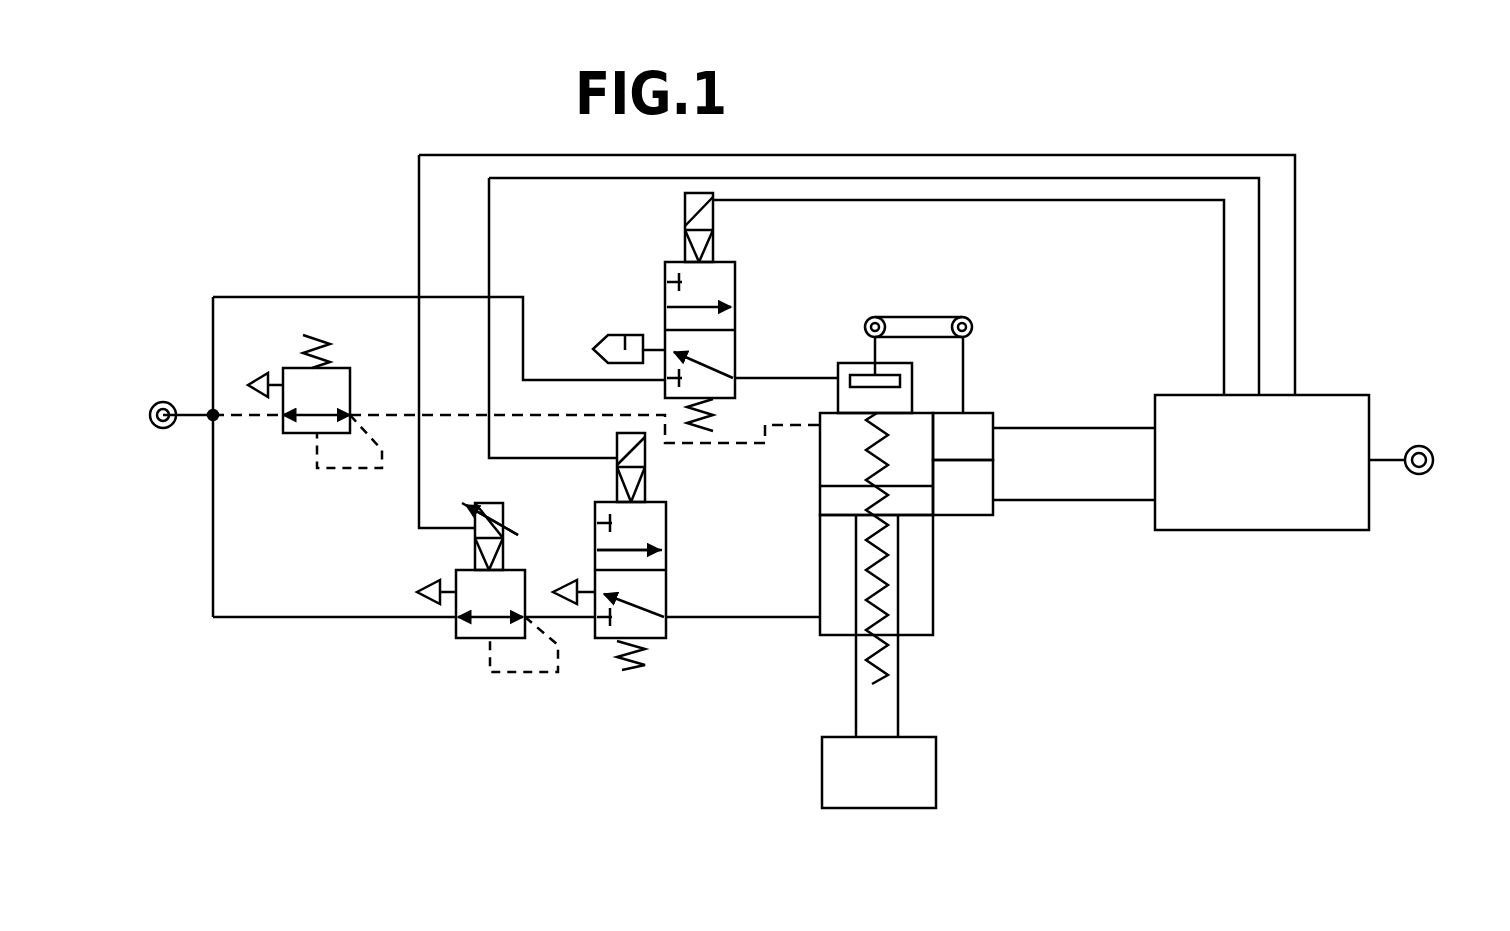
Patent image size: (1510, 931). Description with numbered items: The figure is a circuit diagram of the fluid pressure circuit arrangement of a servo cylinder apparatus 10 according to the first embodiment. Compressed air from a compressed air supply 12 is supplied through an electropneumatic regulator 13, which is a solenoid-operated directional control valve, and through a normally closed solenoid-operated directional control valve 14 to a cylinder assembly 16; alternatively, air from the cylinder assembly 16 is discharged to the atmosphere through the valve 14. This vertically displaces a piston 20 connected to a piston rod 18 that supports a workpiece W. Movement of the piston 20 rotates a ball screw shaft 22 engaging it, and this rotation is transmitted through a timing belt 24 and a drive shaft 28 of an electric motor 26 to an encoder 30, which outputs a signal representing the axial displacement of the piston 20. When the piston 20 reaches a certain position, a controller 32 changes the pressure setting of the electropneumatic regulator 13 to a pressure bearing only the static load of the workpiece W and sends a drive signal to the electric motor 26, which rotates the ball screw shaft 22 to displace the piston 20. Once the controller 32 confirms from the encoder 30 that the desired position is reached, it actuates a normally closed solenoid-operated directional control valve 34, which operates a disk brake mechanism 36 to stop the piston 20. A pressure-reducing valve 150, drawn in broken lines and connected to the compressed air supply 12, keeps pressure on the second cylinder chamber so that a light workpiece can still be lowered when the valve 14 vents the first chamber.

The servo cylinder apparatus 10 is at (1052, 131).
The compressed air supply 12 is at (165, 400).
The electropneumatic regulator 13 is at (468, 640).
The normally closed solenoid-operated directional control valve 14 is at (603, 640).
The cylinder assembly 16 is at (804, 537).
The piston rod 18 is at (862, 710).
The piston 20 is at (828, 502).
The ball screw shaft 22 is at (890, 570).
The timing belt 24 is at (923, 318).
The electric motor 26 is at (998, 417).
The drive shaft 28 is at (968, 362).
The encoder 30 is at (980, 505).
The controller 32 is at (1333, 403).
The normally closed solenoid-operated directional control valve 34 is at (736, 280).
The disk brake mechanism 36 is at (853, 363).
The pressure-reducing valve 150 is at (343, 365).